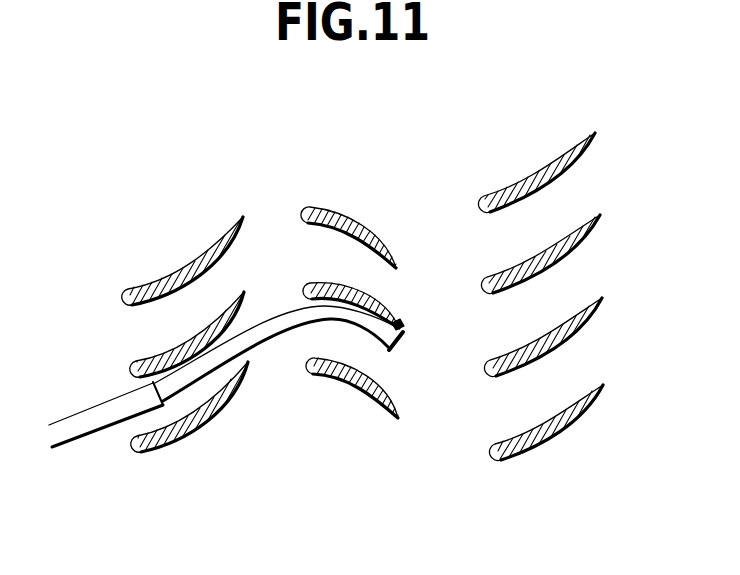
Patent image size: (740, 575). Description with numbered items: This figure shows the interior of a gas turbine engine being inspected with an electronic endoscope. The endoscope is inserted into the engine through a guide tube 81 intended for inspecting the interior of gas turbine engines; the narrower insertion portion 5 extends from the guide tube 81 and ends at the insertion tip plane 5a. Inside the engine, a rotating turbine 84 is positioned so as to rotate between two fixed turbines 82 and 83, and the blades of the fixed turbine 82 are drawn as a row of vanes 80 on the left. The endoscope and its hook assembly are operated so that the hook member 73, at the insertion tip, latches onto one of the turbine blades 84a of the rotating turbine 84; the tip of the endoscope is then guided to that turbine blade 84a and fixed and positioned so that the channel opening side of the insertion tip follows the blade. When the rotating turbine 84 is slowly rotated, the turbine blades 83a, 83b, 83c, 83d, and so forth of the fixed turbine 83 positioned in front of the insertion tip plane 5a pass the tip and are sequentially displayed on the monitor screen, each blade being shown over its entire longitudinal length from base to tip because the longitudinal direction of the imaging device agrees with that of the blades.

The tube 5 is at (273, 338).
The insertion tip plane 5a is at (392, 350).
The hook member 73 is at (411, 311).
The vane group 80 is at (187, 201).
The guide tube 81 is at (96, 402).
The fixed turbine 82 is at (173, 461).
The fixed turbine 83 is at (509, 475).
The turbine blade 83a is at (569, 422).
The turbine blade 83b is at (572, 326).
The turbine blade 83c is at (573, 245).
The turbine blade 83d is at (566, 162).
The rotating turbine 84 is at (342, 444).
The turbine blade 84a is at (322, 284).